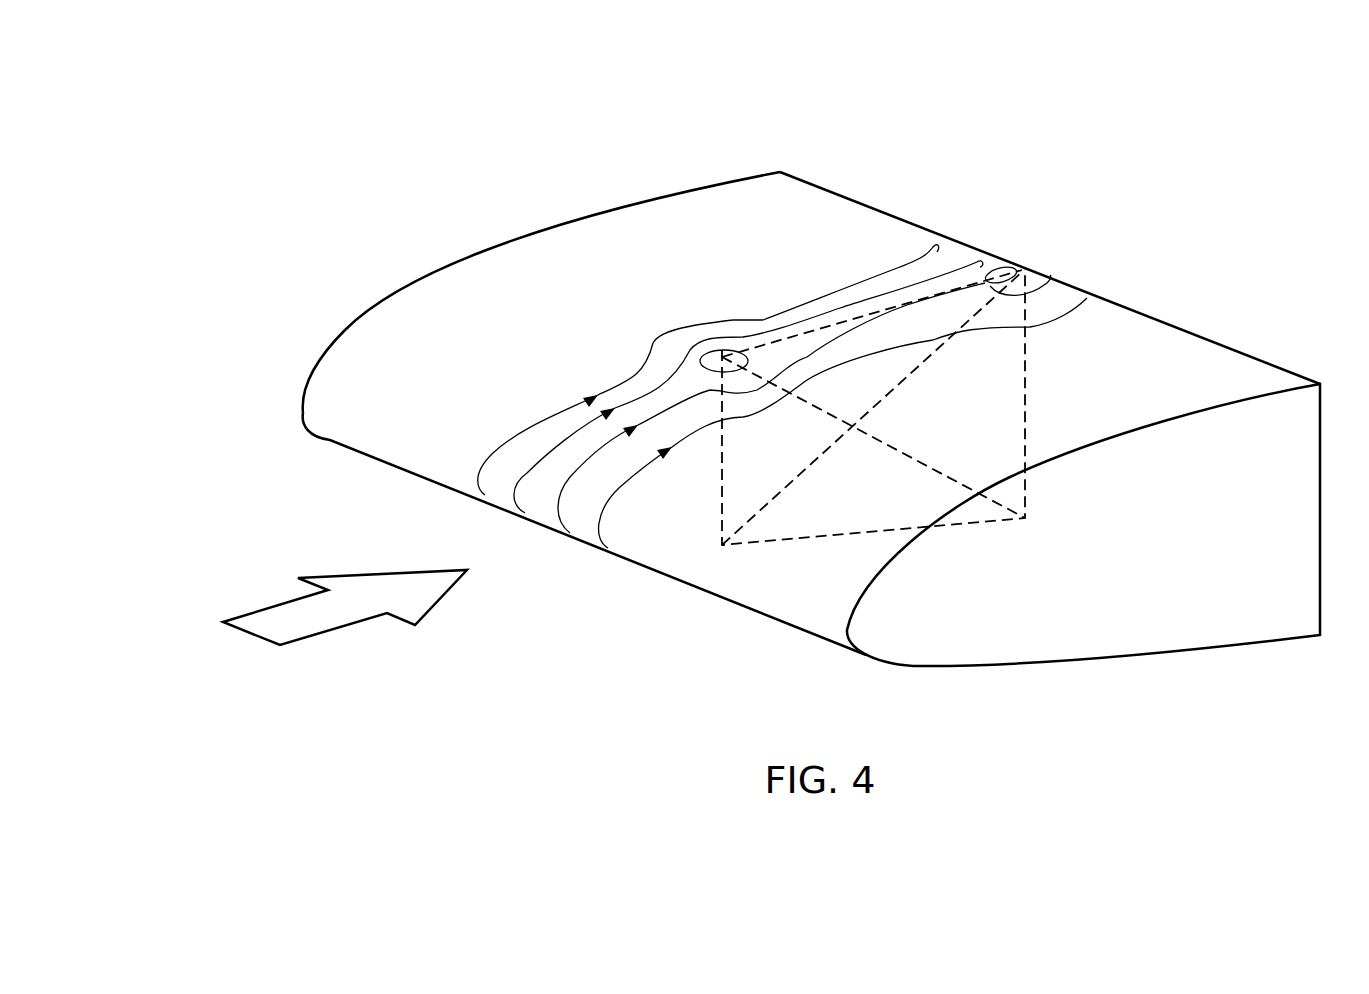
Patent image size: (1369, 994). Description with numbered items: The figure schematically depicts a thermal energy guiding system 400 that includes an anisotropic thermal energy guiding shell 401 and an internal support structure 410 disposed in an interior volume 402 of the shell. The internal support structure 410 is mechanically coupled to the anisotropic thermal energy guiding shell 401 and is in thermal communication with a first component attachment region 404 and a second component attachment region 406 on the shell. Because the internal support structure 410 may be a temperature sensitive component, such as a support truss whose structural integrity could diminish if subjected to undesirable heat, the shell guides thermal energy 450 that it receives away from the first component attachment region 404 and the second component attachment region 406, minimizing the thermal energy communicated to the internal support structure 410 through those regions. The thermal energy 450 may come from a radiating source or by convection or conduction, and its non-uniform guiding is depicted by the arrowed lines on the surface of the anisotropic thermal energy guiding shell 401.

The thermal energy guiding system 400 is at (796, 130).
The anisotropic thermal energy guiding shell 401 is at (594, 214).
The interior volume 402 is at (838, 224).
The first component attachment region 404 is at (723, 360).
The second component attachment region 406 is at (1023, 271).
The internal support structure 410 is at (722, 497).
The thermal energy 450 is at (335, 576).